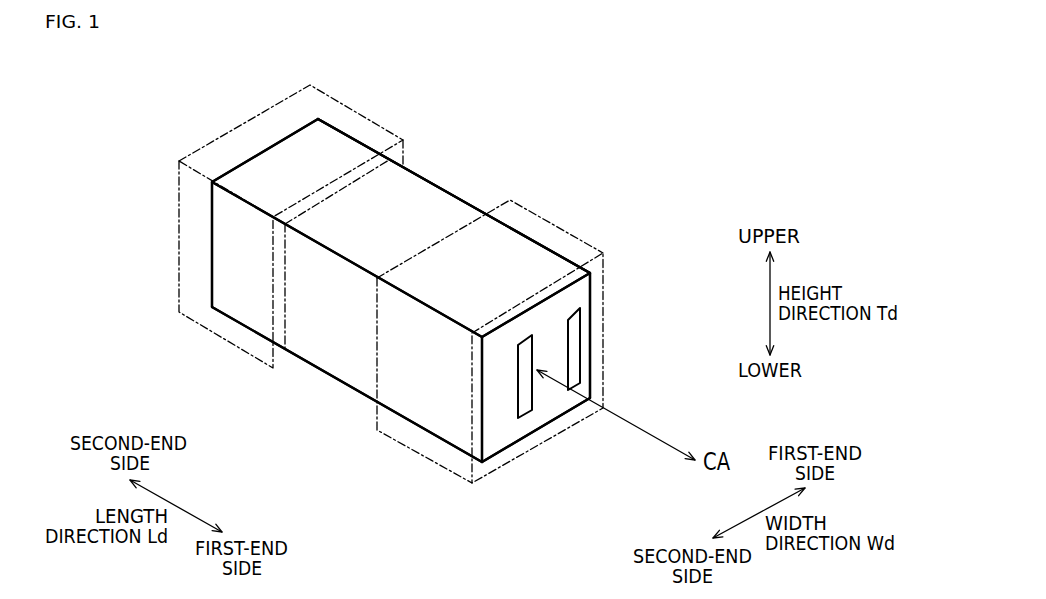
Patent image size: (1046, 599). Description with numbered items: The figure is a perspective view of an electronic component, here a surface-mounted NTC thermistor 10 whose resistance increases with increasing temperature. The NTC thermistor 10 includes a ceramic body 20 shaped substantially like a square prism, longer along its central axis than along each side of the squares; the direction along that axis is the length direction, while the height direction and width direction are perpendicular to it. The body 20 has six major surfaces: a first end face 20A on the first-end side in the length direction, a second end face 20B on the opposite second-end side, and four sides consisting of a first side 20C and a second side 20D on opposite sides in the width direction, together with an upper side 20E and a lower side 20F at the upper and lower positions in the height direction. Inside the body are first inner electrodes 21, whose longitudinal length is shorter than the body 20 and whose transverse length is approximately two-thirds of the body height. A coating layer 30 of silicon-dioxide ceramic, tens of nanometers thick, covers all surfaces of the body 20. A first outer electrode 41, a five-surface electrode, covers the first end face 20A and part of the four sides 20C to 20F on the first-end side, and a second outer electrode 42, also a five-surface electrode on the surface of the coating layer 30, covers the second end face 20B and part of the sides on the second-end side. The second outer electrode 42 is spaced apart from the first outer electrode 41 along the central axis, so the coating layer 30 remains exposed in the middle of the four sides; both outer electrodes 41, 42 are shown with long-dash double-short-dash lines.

The NTC thermistor 10 is at (389, 275).
The body 20 is at (411, 300).
The first end face 20A is at (579, 399).
The second end face 20B is at (223, 162).
The first side 20C is at (577, 223).
The second side 20D is at (346, 359).
The upper side 20E is at (424, 206).
The lower side 20F is at (307, 397).
The first inner electrodes 21 is at (575, 337).
The coating layer 30 is at (453, 207).
The first outer electrode 41 is at (603, 378).
The second outer electrode 42 is at (178, 270).